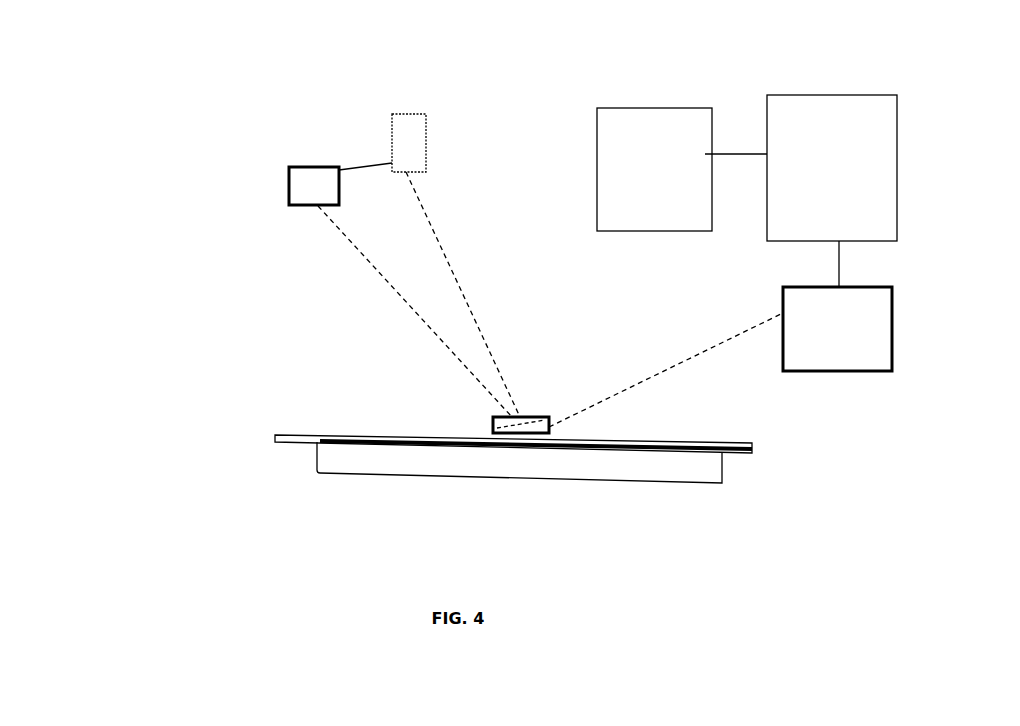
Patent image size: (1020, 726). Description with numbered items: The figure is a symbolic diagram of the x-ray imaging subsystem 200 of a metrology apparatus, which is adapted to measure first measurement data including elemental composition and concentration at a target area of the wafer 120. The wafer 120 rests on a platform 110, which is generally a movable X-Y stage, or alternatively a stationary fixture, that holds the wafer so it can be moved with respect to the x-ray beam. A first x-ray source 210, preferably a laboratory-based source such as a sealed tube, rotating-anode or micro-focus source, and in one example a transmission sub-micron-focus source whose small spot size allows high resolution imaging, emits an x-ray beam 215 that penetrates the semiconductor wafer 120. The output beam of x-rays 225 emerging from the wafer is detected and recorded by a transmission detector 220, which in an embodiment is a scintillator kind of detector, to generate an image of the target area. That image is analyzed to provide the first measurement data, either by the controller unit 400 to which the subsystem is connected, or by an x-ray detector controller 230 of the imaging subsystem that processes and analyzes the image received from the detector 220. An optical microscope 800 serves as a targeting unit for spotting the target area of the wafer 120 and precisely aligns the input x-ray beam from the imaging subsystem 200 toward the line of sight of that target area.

The x-ray imaging subsystem 200 is at (166, 75).
The optical microscope 800 is at (287, 198).
The first x-ray source 210 is at (383, 153).
The x-ray beam 215 is at (470, 315).
The controller unit 400 is at (572, 171).
The x-ray detector controller 230 is at (820, 134).
The transmission detector 220 is at (870, 335).
The output beam of x-rays 225 is at (688, 349).
The wafer 120 is at (551, 429).
The platform 110 is at (688, 472).